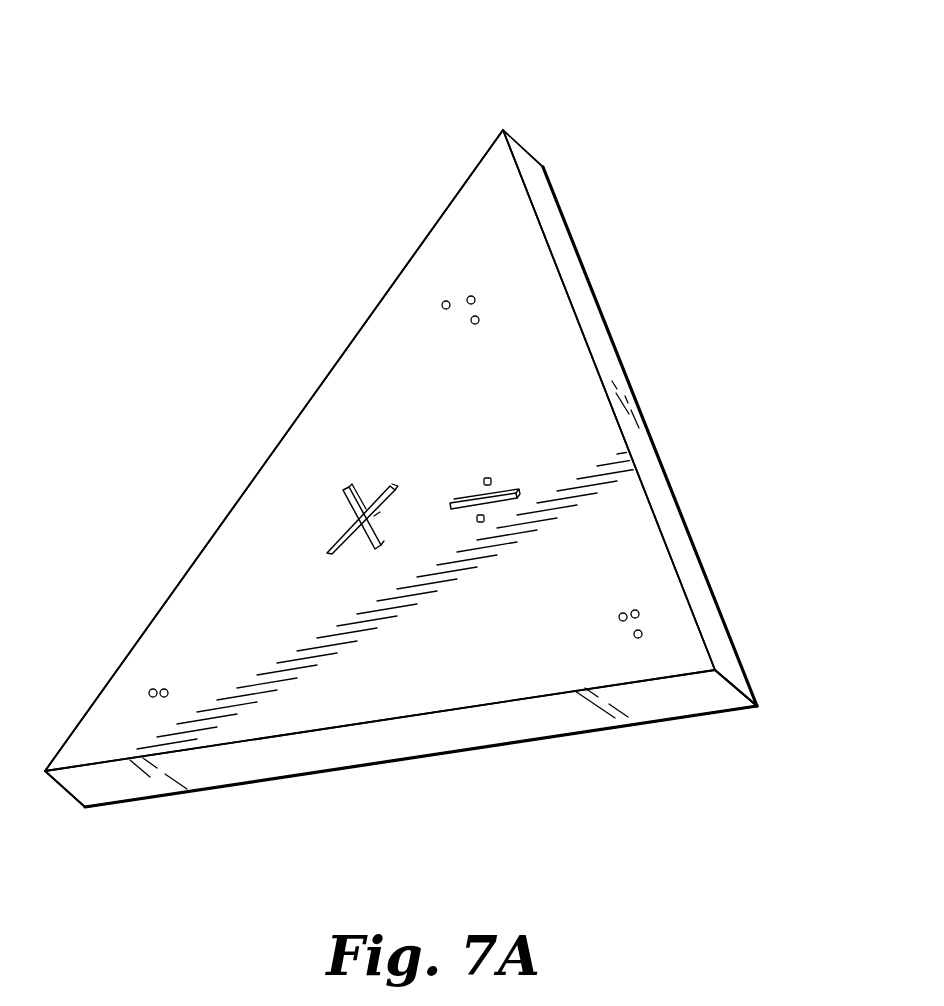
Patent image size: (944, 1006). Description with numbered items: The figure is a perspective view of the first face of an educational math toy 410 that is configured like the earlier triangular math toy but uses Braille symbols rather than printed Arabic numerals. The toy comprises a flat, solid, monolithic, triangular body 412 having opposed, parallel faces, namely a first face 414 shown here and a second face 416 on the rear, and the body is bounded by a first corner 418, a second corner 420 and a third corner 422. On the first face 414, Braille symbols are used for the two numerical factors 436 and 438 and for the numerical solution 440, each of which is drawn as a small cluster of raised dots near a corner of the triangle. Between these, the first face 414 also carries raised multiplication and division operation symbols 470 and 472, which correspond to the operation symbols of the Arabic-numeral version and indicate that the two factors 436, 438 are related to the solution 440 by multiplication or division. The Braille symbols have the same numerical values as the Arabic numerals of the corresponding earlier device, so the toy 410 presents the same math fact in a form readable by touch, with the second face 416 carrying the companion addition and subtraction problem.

The educational math toy 410 is at (197, 112).
The triangular body 412 is at (337, 366).
The first face 414 is at (283, 483).
The second face 416 is at (213, 597).
The first corner 418 is at (65, 792).
The second corner 420 is at (757, 706).
The third corner 422 is at (528, 150).
The numerical factor 436 is at (150, 690).
The numerical factor 438 is at (638, 611).
The numerical solution 440 is at (474, 297).
The multiplication operation symbol 470 is at (388, 482).
The division operation symbol 472 is at (488, 477).